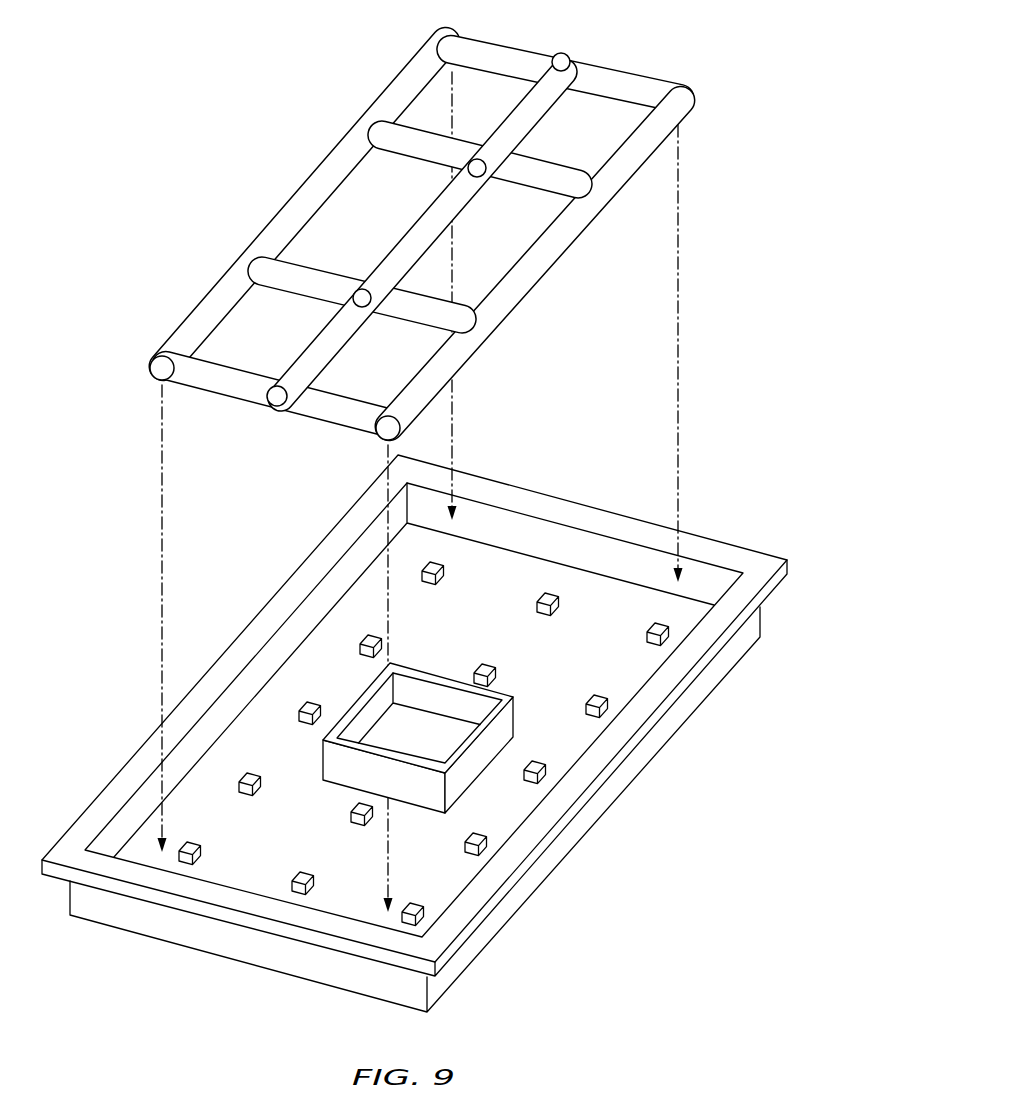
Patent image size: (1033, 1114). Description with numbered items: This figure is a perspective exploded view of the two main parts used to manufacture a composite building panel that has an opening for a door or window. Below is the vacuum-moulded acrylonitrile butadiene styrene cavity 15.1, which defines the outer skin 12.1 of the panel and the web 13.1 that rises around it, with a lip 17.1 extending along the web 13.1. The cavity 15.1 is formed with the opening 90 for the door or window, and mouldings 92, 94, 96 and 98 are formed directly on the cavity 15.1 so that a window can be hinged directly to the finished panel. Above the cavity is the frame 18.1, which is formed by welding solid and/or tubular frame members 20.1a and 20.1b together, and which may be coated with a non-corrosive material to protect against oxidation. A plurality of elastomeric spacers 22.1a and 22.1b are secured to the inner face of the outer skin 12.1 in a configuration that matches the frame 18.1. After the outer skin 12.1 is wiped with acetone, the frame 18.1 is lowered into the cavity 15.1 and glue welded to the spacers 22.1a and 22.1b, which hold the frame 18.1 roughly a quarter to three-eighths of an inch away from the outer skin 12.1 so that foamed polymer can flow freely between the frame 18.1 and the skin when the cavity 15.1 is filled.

The frame 18.1 is at (422, 229).
The frame member 20.1a is at (320, 347).
The frame member 20.1b is at (505, 299).
The acrylonitrile butadiene styrene cavity 15.1 is at (442, 732).
The lip 17.1 is at (710, 633).
The web 13.1 is at (705, 681).
The outer skin 12.1 is at (489, 625).
The elastomeric spacer 22.1a is at (328, 807).
The elastomeric spacer 22.1b is at (478, 822).
The opening 90 is at (432, 706).
The moulding 92 is at (470, 767).
The moulding 94 is at (345, 767).
The moulding 96 is at (360, 722).
The moulding 98 is at (431, 731).